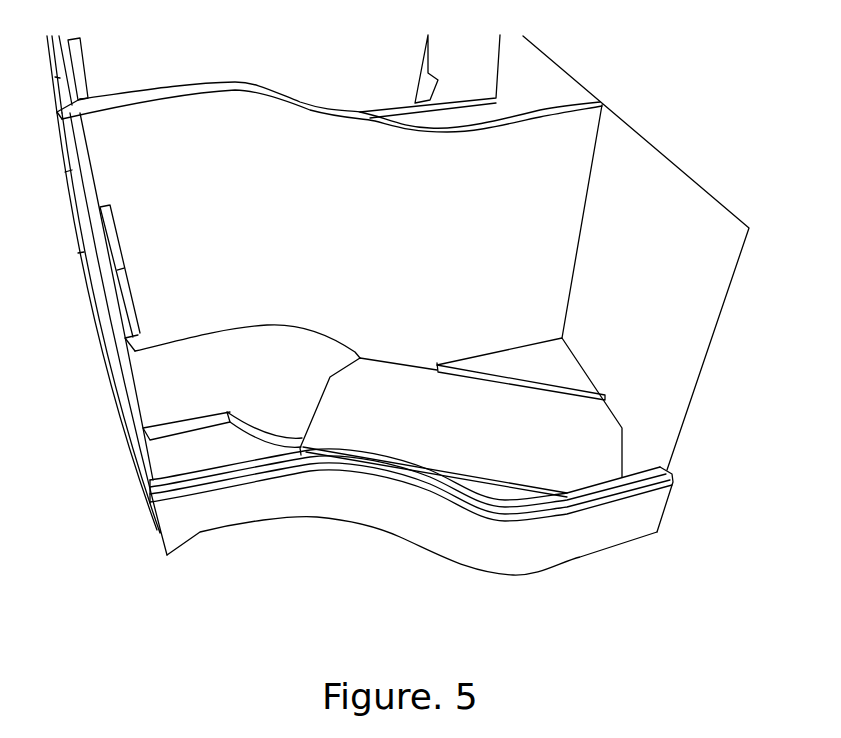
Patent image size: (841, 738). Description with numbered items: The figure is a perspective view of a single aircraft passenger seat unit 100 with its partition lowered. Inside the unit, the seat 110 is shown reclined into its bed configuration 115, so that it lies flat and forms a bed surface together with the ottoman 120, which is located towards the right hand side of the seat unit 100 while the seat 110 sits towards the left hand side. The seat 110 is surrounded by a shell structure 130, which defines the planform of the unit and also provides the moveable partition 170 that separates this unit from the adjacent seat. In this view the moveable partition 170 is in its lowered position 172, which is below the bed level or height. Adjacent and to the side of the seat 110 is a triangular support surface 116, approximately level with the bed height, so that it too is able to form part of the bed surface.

The seat unit 100 is at (422, 349).
The seat 110 is at (565, 501).
The bed configuration 115 is at (565, 501).
The triangular support surface 116 is at (552, 371).
The ottoman 120 is at (163, 395).
The shell structure 130 is at (688, 348).
The moveable partition 170 is at (357, 548).
The lowered position 172 is at (215, 521).